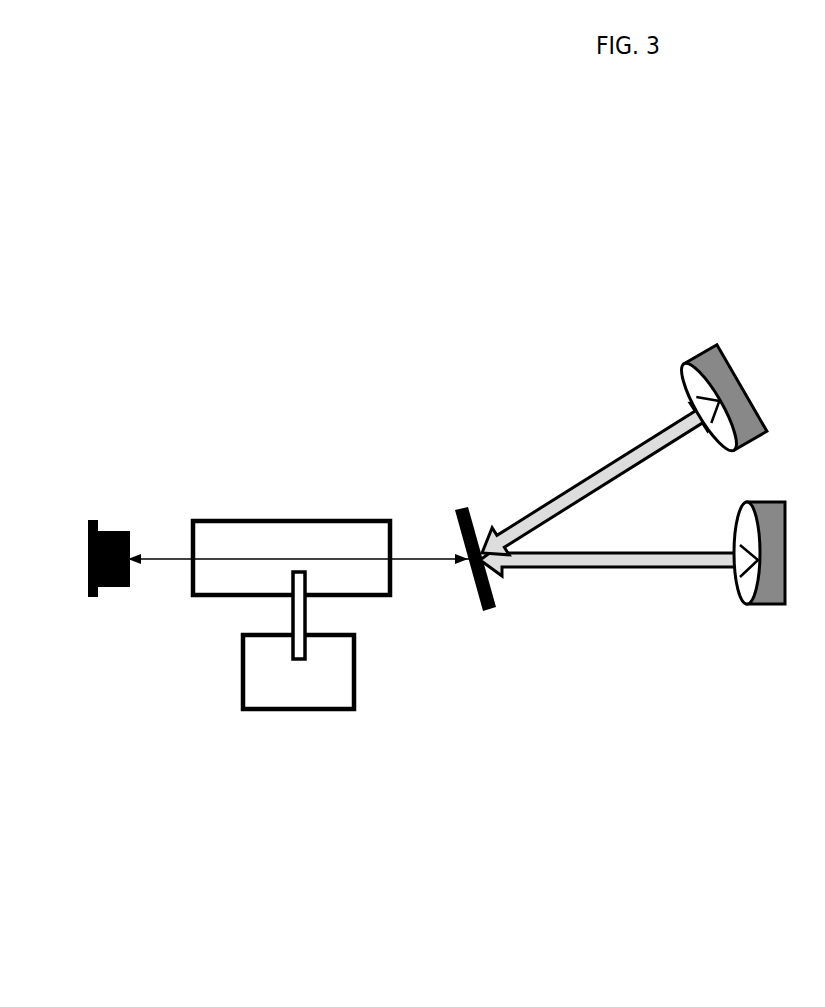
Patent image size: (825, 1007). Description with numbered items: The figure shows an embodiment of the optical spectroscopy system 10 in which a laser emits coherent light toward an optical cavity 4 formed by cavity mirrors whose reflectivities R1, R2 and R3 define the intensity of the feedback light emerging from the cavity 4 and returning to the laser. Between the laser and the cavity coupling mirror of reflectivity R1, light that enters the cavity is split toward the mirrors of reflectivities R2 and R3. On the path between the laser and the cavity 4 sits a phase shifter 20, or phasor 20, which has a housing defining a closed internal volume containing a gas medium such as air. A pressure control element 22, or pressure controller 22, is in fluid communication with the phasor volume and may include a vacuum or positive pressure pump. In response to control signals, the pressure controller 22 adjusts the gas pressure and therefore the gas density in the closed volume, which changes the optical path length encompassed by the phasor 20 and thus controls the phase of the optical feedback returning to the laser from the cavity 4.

The optical spectroscopy system 10 is at (315, 342).
The phase shifter 20 is at (216, 533).
The pressure control element 22 is at (240, 673).
The optical cavity 4 is at (615, 484).
The reflectivity of coupling mirror R1 is at (489, 588).
The reflectivity of second cavity mirror R2 is at (760, 585).
The reflectivity of third cavity mirror R3 is at (699, 401).